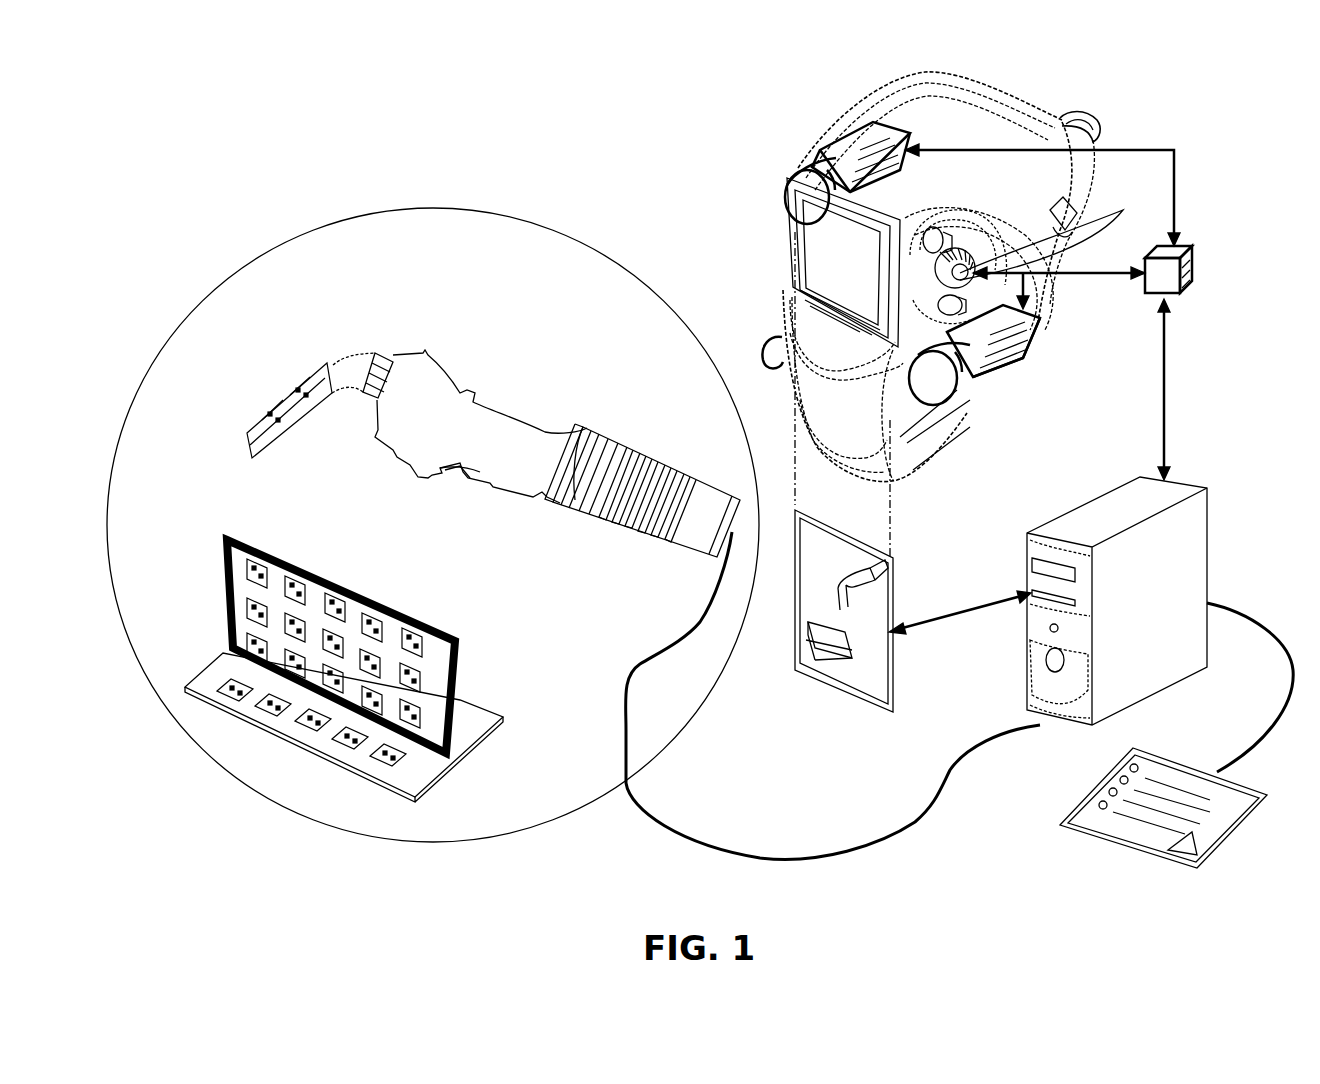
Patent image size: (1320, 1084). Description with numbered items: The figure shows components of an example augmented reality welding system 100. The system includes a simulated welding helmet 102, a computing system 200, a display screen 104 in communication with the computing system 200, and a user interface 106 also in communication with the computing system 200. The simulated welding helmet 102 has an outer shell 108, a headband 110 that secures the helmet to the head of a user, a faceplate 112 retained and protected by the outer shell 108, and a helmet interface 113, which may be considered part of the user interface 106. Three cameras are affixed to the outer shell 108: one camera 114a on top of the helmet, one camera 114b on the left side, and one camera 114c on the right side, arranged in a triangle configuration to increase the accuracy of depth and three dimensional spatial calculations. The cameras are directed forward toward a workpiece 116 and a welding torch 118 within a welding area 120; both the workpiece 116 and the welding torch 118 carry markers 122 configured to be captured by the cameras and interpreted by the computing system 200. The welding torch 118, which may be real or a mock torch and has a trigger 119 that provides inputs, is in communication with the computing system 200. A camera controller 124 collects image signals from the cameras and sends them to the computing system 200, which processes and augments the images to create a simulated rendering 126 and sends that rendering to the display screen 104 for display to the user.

The augmented reality welding system 100 is at (205, 125).
The simulated welding helmet 102 is at (942, 297).
The display screen 104 is at (840, 698).
The user interface 106 is at (1125, 850).
The outer shell 108 is at (968, 122).
The headband 110 is at (1052, 128).
The faceplate 112 is at (815, 260).
The helmet interface 113 is at (1075, 212).
The camera 114a is at (830, 150).
The camera 114b is at (1042, 322).
The camera 114c is at (770, 330).
The workpiece 116 is at (340, 575).
The welding torch 118 is at (458, 368).
The trigger 119 is at (497, 487).
The welding area 120 is at (433, 210).
The markers 122 is at (250, 433).
The camera controller 124 is at (1195, 265).
The simulated rendering 126 is at (892, 598).
The computing system 200 is at (1192, 570).